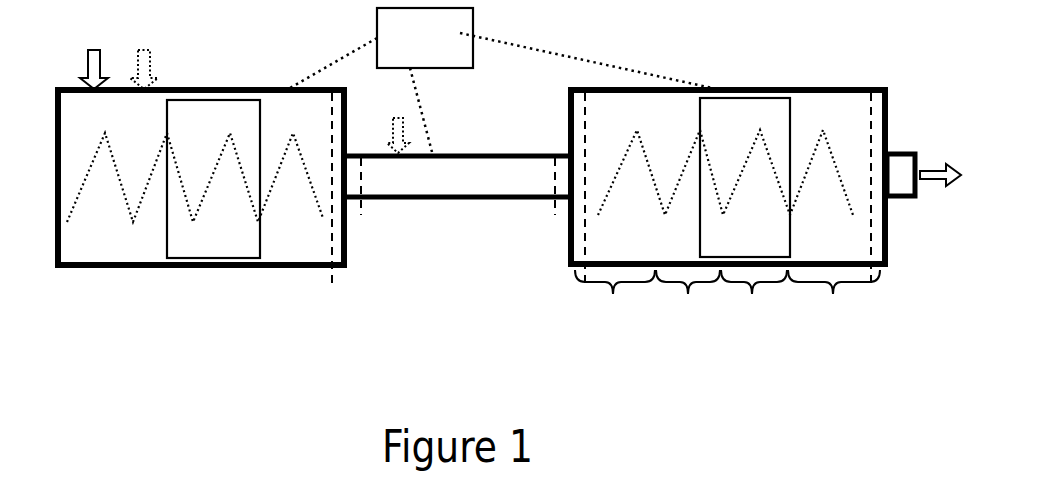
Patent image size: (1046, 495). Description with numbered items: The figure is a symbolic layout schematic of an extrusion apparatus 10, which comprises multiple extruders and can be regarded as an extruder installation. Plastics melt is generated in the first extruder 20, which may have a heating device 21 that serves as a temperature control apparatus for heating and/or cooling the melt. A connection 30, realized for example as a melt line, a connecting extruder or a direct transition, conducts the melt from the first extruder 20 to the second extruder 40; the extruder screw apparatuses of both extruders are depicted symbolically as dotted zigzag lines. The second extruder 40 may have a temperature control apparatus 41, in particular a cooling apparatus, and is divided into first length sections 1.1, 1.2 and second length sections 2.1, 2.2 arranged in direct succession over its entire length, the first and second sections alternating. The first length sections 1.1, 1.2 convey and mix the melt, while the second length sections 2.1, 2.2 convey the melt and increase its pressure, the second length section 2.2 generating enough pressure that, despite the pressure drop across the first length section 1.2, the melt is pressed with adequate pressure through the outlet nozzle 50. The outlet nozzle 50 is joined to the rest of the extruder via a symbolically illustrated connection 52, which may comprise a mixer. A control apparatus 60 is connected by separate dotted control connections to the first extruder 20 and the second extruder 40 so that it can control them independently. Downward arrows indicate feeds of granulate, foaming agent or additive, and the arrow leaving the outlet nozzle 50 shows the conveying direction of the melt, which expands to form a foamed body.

The extrusion apparatus 10 is at (472, 330).
The first extruder 20 is at (201, 177).
The heating device 21 is at (213, 179).
The connection 30 is at (490, 151).
The second extruder 40 is at (734, 150).
The temperature control apparatus 41 is at (745, 177).
The outlet nozzle 50 is at (908, 150).
The connection 52 is at (873, 76).
The control apparatus 60 is at (501, 80).
The first length section 1.1 is at (688, 300).
The first length section 1.2 is at (834, 301).
The second length section 2.1 is at (615, 300).
The second length section 2.2 is at (754, 300).